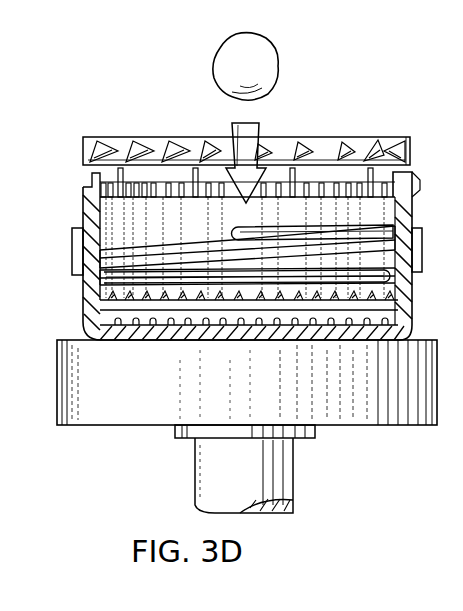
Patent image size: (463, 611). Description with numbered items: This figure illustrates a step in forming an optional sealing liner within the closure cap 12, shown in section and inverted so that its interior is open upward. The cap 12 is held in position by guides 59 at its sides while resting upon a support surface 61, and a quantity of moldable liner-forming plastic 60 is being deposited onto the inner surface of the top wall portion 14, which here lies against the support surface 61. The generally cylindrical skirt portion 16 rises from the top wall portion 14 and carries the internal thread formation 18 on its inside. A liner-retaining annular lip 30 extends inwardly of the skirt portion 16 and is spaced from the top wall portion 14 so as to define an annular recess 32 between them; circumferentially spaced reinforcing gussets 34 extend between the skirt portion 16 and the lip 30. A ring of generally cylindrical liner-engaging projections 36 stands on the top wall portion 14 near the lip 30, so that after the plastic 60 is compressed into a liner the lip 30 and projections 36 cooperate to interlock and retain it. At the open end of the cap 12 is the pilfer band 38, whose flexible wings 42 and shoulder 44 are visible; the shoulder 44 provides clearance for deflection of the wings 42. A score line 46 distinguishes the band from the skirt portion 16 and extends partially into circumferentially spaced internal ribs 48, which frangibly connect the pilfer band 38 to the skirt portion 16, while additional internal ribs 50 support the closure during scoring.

The closure cap 12 is at (73, 300).
The top wall portion 14 is at (362, 340).
The skirt portion 16 is at (82, 208).
The internal thread formation 18 is at (232, 233).
The liner-retaining annular lip 30 is at (393, 298).
The annular recess 32 is at (393, 322).
The reinforcing gussets 34 is at (172, 293).
The liner-engaging projections 36 is at (190, 336).
The pilfer band 38 is at (78, 137).
The wings 42 is at (178, 138).
The shoulder 44 is at (353, 154).
The score line 46 is at (315, 176).
The internal ribs 48 is at (195, 190).
The internal ribs 50 is at (150, 190).
The guides 59 is at (72, 246).
The liner-forming plastic 60 is at (278, 54).
The support surface 61 is at (76, 392).